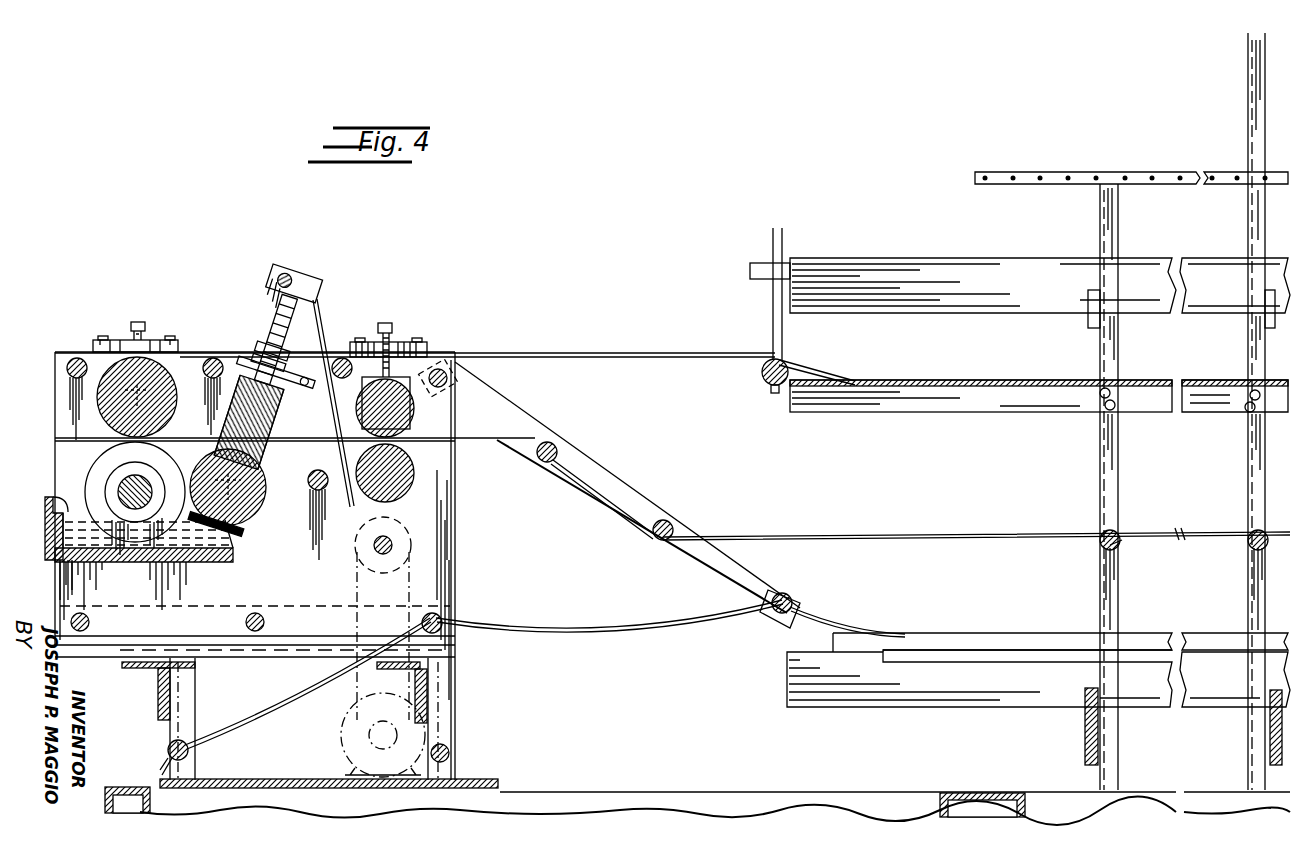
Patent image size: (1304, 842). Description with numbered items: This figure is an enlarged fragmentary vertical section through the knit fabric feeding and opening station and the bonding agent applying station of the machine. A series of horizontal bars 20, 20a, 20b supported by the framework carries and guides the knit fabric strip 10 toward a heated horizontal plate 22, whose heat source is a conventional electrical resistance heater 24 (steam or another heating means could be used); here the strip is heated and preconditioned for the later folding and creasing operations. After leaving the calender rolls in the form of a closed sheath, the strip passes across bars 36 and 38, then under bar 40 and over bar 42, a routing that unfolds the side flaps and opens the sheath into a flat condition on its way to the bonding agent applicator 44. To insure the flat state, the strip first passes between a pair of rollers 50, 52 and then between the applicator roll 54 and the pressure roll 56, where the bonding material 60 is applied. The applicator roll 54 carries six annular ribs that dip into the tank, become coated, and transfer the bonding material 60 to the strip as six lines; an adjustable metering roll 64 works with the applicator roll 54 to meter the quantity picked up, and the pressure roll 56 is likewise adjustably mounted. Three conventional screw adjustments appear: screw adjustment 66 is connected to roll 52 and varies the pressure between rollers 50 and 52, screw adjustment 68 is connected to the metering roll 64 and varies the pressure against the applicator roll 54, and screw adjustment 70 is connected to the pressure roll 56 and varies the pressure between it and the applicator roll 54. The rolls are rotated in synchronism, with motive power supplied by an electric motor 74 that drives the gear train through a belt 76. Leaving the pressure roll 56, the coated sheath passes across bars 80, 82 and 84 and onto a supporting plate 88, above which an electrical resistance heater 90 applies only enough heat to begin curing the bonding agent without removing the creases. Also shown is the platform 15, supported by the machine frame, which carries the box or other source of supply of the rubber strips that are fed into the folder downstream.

The knit fabric strip 10 is at (662, 632).
The platform 15 is at (1085, 173).
The horizontal bar 20 is at (190, 750).
The horizontal bar 20a is at (445, 628).
The horizontal bar 20b is at (795, 597).
The heated horizontal plate 22 is at (1040, 635).
The electrical resistance heater 24 is at (995, 690).
The bar 36 is at (1246, 544).
The bar 38 is at (1120, 542).
The bar 40 is at (670, 528).
The bar 42 is at (546, 462).
The bonding agent applicator 44 is at (60, 352).
The roller 50 is at (408, 488).
The roller 52 is at (412, 412).
The applicator roll 54 is at (95, 470).
The pressure roll 56 is at (107, 398).
The bonding material 60 is at (72, 540).
The metering roll 64 is at (256, 512).
The screw adjustment 66 is at (392, 334).
The screw adjustment 68 is at (274, 344).
The screw adjustment 70 is at (150, 320).
The electric motor 74 is at (342, 748).
The belt 76 is at (352, 698).
The bar 80 is at (215, 356).
The bar 82 is at (343, 357).
The bar 84 is at (766, 380).
The supporting plate 88 is at (946, 410).
The electrical resistance heater 90 is at (966, 312).